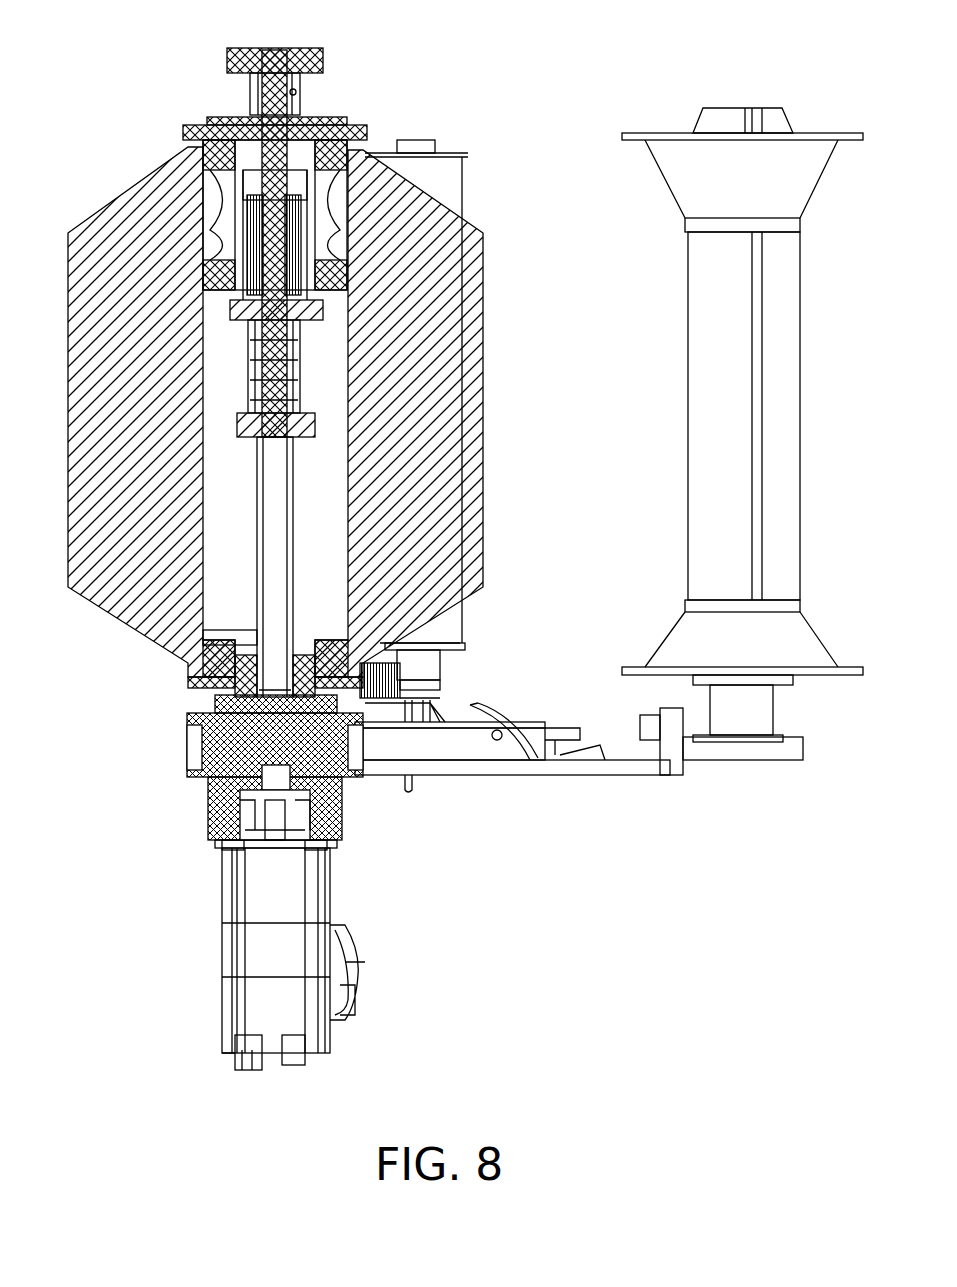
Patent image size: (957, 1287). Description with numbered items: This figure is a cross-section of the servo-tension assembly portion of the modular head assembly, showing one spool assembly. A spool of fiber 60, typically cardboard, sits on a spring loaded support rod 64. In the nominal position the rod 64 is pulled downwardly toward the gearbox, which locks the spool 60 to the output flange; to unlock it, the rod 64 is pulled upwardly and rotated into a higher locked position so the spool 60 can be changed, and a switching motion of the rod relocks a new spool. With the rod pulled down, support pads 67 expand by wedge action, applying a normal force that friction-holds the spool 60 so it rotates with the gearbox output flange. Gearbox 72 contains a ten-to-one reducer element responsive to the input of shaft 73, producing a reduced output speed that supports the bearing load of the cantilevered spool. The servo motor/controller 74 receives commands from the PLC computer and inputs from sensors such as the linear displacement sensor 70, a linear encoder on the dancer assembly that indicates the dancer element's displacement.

The spool of fiber 60 is at (462, 290).
The spring loaded support rod 64 is at (300, 45).
The support pads 67 is at (214, 626).
The linear displacement sensor 70 is at (468, 692).
The gearbox 72 is at (348, 820).
The shaft 73 is at (277, 787).
The servo motor/controller 74 is at (362, 962).